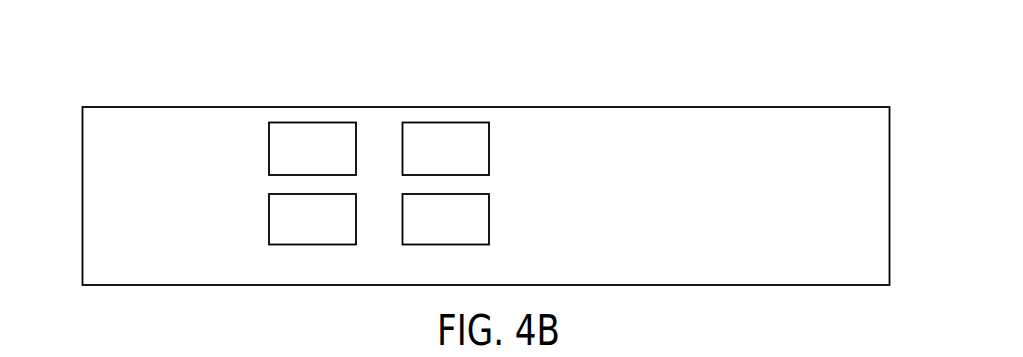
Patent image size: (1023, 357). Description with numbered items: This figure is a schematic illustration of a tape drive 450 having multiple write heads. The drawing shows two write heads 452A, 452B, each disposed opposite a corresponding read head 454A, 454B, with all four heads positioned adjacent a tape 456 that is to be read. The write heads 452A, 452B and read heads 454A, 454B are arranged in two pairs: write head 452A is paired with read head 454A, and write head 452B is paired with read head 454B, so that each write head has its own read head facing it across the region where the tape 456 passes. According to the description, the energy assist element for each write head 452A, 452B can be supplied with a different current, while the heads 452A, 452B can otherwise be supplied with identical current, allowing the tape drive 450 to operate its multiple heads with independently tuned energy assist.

The tape drive 450 is at (920, 82).
The write head 452A is at (341, 160).
The write head 452B is at (341, 232).
The read head 454A is at (474, 160).
The read head 454B is at (474, 232).
The tape 456 is at (662, 196).